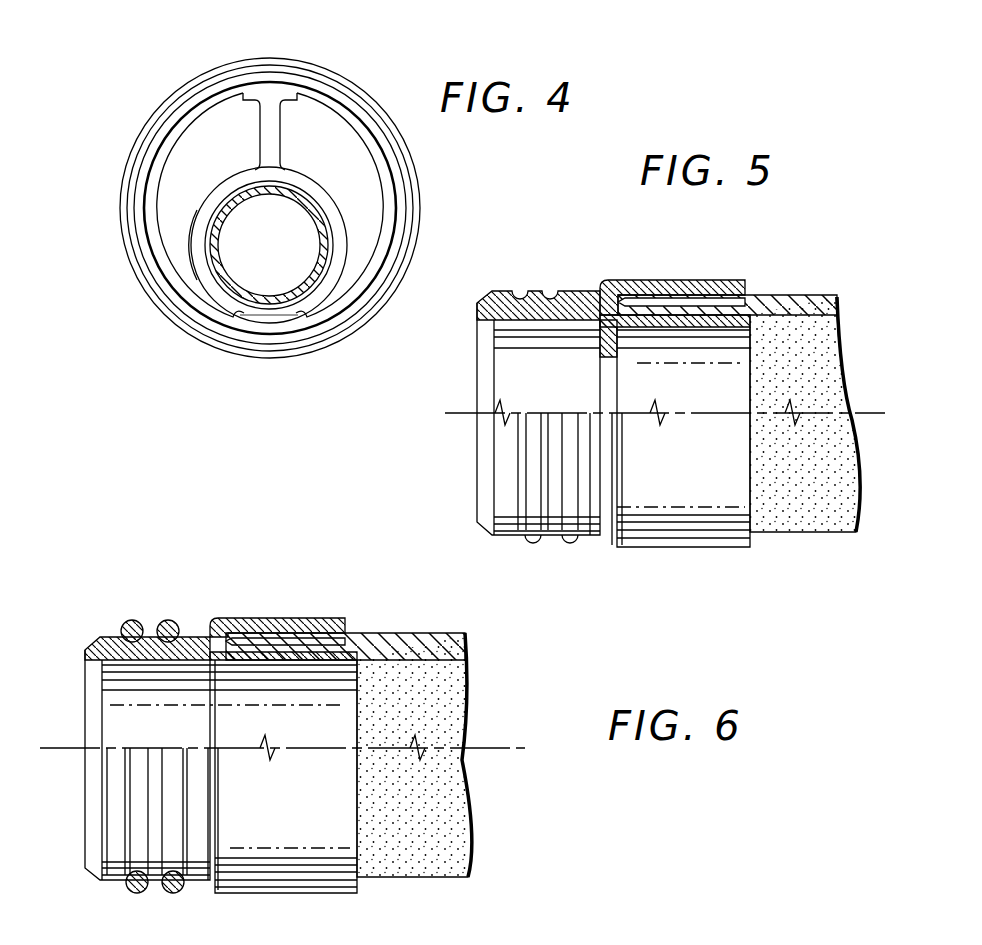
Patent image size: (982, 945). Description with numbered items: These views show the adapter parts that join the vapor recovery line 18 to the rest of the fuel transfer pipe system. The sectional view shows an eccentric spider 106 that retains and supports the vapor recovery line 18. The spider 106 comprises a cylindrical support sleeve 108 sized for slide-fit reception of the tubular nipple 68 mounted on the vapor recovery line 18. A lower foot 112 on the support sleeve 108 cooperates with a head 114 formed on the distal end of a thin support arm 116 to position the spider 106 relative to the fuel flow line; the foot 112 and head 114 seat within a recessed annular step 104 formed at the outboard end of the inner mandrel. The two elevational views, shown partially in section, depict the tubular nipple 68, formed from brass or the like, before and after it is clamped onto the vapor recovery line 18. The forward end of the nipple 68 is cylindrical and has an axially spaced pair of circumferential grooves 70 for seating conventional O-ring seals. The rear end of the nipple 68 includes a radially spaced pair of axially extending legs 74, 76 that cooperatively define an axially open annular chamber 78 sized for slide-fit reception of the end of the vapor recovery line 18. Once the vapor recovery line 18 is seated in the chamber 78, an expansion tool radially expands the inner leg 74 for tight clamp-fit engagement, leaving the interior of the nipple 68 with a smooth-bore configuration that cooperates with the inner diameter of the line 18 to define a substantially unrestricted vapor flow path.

In FIG. 5, the vapor recovery line 18 is at (790, 295).
In FIG. 6, the vapor recovery line 18 is at (470, 818).
In FIG. 4, the tubular nipple 68 is at (305, 200).
In FIG. 5, the tubular nipple 68 is at (670, 470).
In FIG. 6, the tubular nipple 68 is at (195, 614).
In FIG. 5, the circumferential grooves 70 is at (533, 540).
In FIG. 6, the circumferential grooves 70 is at (140, 944).
In FIG. 5, the inner leg 74 is at (715, 330).
In FIG. 6, the inner leg 74 is at (306, 698).
In FIG. 5, the outer leg 76 is at (733, 295).
In FIG. 6, the outer leg 76 is at (286, 618).
In FIG. 5, the annular chamber 78 is at (650, 300).
In FIG. 4, the recessed annular step 104 is at (350, 118).
In FIG. 4, the eccentric spider 106 is at (190, 238).
In FIG. 4, the cylindrical support sleeve 108 is at (345, 242).
In FIG. 4, the lower foot 112 is at (245, 305).
In FIG. 4, the head 114 is at (273, 98).
In FIG. 4, the support arm 116 is at (262, 133).